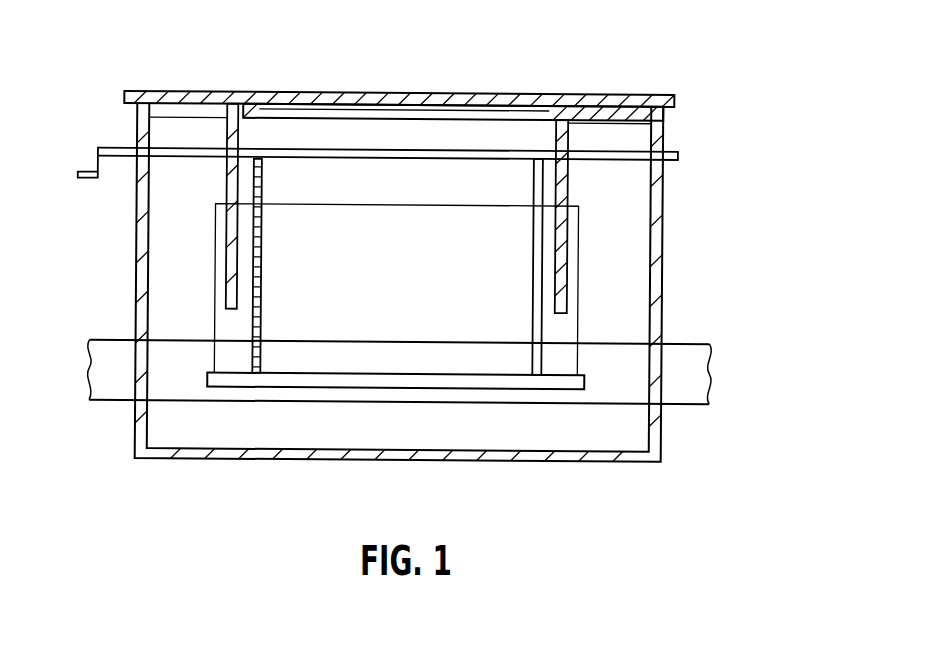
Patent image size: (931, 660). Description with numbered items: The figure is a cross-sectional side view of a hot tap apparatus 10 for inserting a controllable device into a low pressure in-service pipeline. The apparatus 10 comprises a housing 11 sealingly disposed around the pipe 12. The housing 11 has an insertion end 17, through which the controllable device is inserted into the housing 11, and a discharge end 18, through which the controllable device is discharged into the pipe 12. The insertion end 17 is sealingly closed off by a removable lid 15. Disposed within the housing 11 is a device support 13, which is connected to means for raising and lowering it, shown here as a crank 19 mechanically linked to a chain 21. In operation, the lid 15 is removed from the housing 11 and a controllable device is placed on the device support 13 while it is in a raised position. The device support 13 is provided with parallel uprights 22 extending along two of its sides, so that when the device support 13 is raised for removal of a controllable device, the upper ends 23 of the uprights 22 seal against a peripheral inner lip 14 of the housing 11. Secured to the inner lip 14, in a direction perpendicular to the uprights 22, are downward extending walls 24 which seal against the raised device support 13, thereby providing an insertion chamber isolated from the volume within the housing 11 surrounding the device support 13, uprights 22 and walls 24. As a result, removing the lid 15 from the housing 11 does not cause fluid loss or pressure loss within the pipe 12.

The hot tap apparatus 10 is at (724, 137).
The housing 11 is at (663, 304).
The pipe 12 is at (663, 404).
The device support 13 is at (373, 388).
The peripheral inner lip 14 is at (615, 118).
The removable lid 15 is at (474, 94).
The insertion end 17 is at (175, 130).
The discharge end 18 is at (162, 325).
The crank 19 is at (115, 148).
The chain 21 is at (263, 310).
The uprights 22 is at (579, 232).
The upper ends 23 is at (404, 204).
The downward extending walls 24 is at (570, 180).